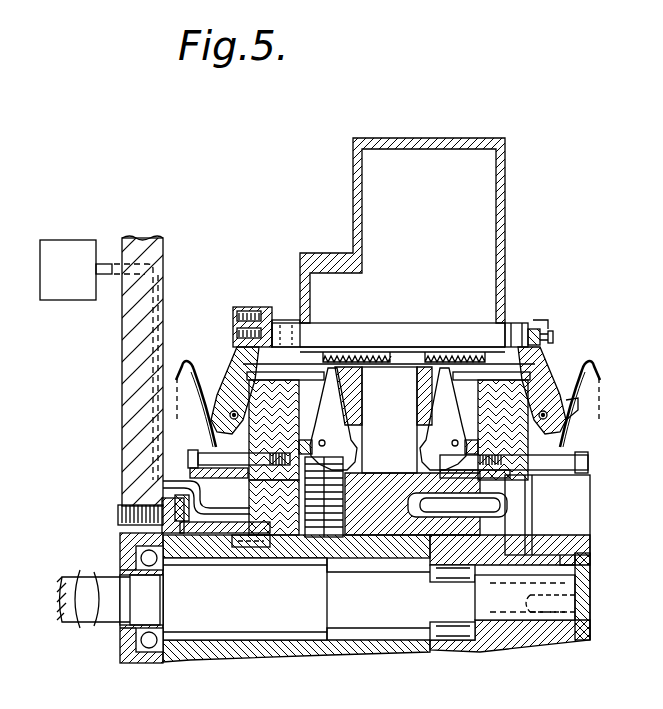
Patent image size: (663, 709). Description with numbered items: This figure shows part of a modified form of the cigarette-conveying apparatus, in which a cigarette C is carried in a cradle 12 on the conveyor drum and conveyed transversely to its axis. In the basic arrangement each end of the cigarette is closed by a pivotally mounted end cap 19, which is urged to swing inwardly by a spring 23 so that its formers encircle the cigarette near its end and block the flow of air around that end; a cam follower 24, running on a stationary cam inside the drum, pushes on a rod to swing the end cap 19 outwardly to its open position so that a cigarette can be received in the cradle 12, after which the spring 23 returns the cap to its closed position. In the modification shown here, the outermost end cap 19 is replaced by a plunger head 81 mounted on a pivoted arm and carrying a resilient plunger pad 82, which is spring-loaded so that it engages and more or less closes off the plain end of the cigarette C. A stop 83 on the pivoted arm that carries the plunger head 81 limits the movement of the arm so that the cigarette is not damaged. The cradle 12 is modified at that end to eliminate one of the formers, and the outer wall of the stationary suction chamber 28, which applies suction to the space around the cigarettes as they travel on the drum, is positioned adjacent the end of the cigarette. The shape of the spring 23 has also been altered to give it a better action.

The suction chamber 28 is at (490, 207).
The cigarette C is at (403, 330).
The end cap 19 is at (262, 307).
The resilient plunger pad 82 is at (510, 323).
The plunger head 81 is at (537, 322).
The stop 83 is at (552, 378).
The spring 23 is at (586, 392).
The cradle 12 is at (386, 356).
The cam follower 24 is at (348, 445).